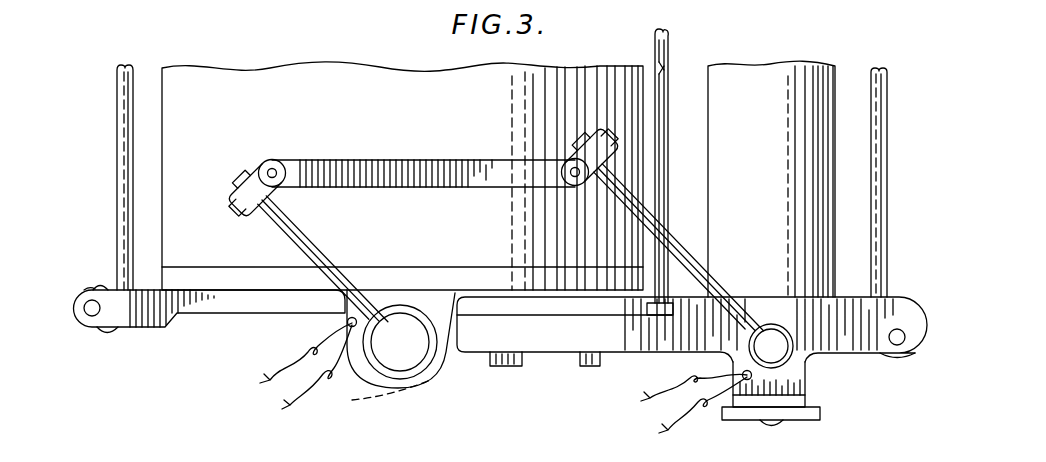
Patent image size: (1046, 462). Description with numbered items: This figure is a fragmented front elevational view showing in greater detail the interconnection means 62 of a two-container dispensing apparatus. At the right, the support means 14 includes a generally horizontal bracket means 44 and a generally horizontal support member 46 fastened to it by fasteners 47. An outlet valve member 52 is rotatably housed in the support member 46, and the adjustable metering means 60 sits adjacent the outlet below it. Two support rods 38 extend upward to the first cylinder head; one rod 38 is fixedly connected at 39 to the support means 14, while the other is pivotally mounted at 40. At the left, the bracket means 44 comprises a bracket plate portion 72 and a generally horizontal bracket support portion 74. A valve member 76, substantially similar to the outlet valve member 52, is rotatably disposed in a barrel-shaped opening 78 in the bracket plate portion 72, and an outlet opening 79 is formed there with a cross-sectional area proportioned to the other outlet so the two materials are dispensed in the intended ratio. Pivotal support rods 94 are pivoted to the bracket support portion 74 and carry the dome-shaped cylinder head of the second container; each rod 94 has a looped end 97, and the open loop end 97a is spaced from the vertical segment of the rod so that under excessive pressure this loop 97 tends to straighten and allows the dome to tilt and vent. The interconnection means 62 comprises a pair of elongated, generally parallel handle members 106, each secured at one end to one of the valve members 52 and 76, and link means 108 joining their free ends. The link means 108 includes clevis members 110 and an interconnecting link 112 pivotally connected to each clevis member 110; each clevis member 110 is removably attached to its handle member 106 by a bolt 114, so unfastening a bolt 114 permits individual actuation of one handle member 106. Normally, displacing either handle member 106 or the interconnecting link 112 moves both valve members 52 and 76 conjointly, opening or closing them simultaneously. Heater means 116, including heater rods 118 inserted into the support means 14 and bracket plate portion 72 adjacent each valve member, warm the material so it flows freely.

The support means 14 is at (601, 402).
The support rods 38 is at (665, 122).
The fixed connection of support rod 39 is at (666, 303).
The pivotal mounting of support rod 40 is at (903, 313).
The bracket means 44 is at (120, 331).
The support member 46 is at (560, 340).
The fasteners 47 is at (506, 368).
The outlet valve member 52 is at (793, 346).
The adjustable metering means 60 is at (827, 408).
The interconnection means 62 is at (450, 161).
The bracket plate portion 72 is at (447, 284).
The bracket support portion 74 is at (210, 318).
The valve member 76 is at (404, 371).
The barrel-shaped opening 78 is at (437, 368).
The outlet opening 79 is at (353, 398).
The pivotal support rods 94 is at (117, 108).
The looped end 97 is at (95, 292).
The open loop end 97a is at (106, 286).
The handle members 106 is at (320, 253).
The link means 108 is at (319, 170).
The clevis members 110 is at (262, 163).
The interconnecting link 112 is at (402, 188).
The bolt 114 is at (234, 206).
The heater means 116 is at (350, 322).
The heater rods 118 is at (369, 323).